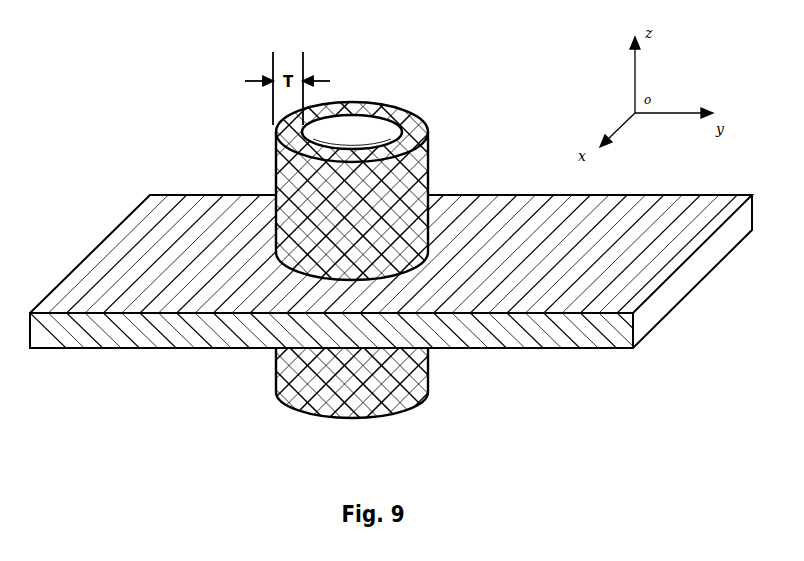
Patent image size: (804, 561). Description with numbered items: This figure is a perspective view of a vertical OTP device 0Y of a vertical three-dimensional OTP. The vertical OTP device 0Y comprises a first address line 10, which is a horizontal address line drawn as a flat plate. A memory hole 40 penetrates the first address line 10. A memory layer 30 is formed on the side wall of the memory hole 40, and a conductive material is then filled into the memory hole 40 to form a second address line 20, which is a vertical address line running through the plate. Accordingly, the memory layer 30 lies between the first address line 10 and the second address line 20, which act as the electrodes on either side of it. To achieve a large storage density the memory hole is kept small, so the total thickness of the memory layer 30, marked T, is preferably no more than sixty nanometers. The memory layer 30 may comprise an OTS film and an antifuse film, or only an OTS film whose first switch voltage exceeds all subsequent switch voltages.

The first address line 10 is at (180, 212).
The second address line 20 is at (372, 127).
The memory layer 30 is at (417, 133).
The memory hole 40 is at (344, 58).
The vertical OTP device 0Y is at (456, 150).